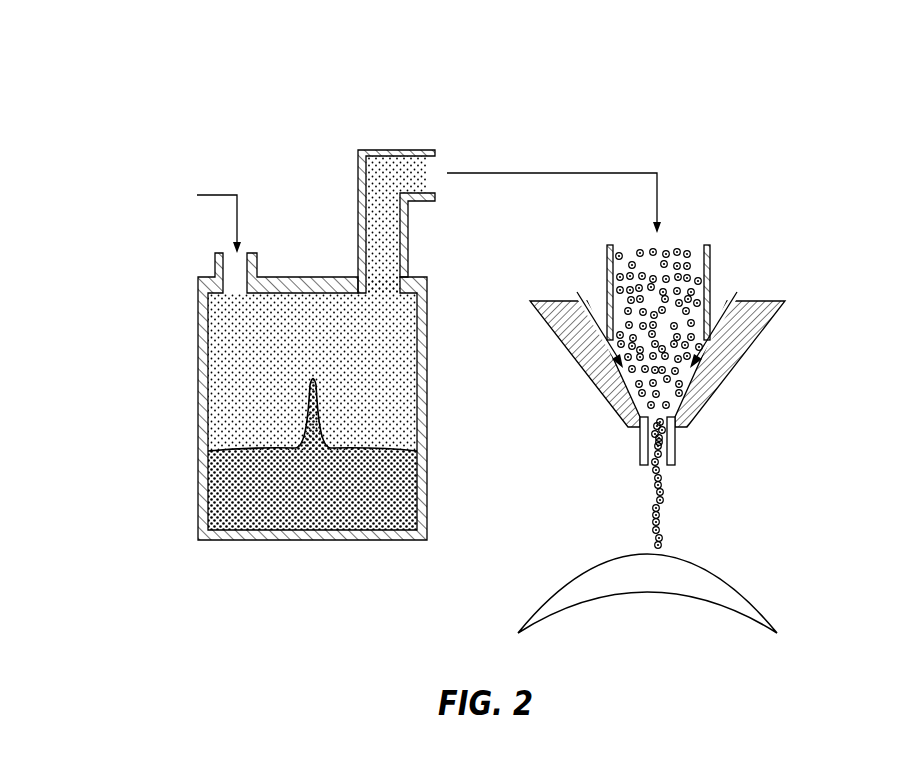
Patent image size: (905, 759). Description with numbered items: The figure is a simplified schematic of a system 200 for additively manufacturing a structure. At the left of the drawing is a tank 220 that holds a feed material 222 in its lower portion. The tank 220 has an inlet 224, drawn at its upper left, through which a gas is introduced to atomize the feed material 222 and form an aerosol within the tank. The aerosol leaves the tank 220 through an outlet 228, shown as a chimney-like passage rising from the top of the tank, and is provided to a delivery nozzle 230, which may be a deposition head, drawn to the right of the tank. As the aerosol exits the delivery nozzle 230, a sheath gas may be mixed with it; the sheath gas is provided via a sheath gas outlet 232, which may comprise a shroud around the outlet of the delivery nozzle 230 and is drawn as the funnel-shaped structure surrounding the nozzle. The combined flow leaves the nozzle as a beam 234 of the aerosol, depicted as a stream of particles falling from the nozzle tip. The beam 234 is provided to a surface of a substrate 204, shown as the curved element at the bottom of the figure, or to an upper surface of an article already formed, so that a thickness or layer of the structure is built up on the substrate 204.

The system 200 is at (170, 112).
The substrate 204 is at (740, 593).
The tank 220 is at (199, 365).
The feed material 222 is at (227, 493).
The inlet 224 is at (199, 218).
The outlet 228 is at (403, 167).
The delivery nozzle 230 is at (668, 268).
The sheath gas outlet 232 is at (659, 348).
The beam 234 is at (665, 493).